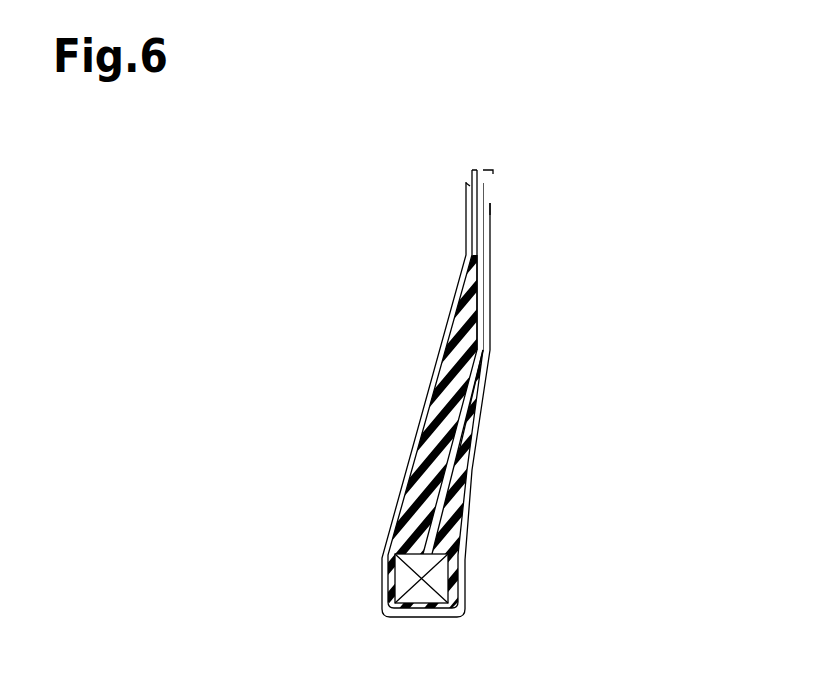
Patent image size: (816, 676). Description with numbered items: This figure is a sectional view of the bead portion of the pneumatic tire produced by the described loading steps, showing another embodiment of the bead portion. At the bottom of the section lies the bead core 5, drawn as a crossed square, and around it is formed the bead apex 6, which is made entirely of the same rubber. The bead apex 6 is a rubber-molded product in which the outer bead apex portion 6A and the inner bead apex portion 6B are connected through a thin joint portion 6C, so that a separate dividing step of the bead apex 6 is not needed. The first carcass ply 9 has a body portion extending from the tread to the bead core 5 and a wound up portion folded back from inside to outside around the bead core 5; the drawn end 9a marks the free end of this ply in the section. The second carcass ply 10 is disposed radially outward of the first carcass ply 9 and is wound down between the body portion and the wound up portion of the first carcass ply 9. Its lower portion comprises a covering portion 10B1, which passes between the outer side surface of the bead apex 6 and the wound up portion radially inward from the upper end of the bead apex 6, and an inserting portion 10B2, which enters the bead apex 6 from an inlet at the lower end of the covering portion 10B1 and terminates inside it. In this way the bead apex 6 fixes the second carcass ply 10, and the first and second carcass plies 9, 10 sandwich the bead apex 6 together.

The bead core 5 is at (447, 580).
The bead apex 6 is at (481, 409).
The outer bead apex portion 6A is at (440, 524).
The inner bead apex portion 6B is at (420, 493).
The thin joint portion 6C is at (400, 620).
The first carcass ply 9 is at (437, 355).
The tube end portion 9a is at (487, 202).
The second carcass ply 10 is at (597, 355).
The covering portion 10B1 is at (474, 334).
The inserting portion 10B2 is at (458, 456).